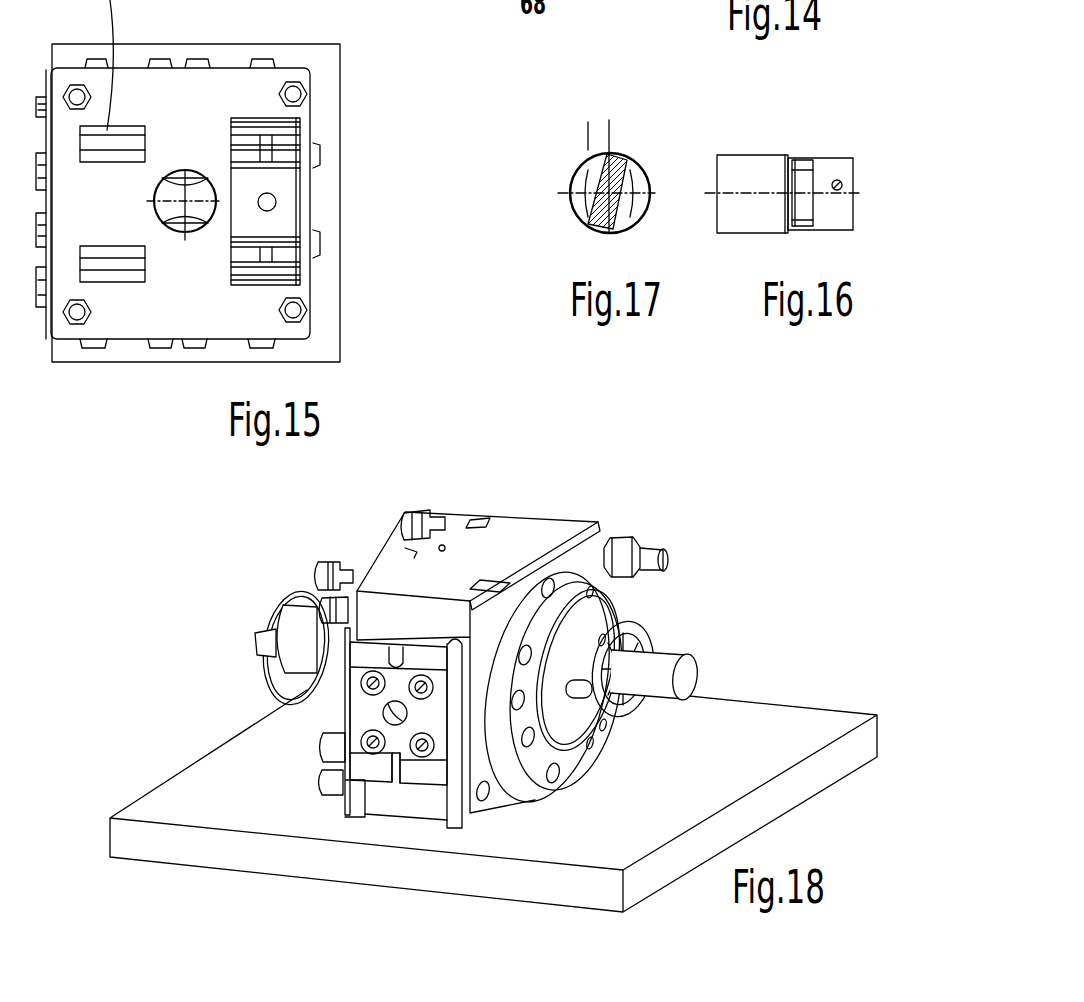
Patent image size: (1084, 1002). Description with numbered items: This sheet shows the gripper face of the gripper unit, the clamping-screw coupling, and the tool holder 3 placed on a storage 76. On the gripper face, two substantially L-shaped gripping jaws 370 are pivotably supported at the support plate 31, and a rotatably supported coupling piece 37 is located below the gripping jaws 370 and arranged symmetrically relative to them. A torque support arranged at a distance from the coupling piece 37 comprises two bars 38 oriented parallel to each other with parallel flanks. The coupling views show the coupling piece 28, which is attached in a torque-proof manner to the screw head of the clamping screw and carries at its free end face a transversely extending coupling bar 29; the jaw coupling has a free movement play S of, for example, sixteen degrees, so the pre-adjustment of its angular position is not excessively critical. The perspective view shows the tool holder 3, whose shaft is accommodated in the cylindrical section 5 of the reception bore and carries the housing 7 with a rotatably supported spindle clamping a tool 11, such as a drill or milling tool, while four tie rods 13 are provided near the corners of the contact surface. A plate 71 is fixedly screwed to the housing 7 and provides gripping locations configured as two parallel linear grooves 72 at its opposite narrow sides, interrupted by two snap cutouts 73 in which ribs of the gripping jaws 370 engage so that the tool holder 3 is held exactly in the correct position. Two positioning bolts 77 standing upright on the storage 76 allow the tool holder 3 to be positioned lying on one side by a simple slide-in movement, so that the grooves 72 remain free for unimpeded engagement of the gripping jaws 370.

In FIG. 15, the support plate 31 is at (245, 88).
In FIG. 15, the coupling piece 37 is at (184, 176).
In FIG. 17, the coupling piece 37 is at (573, 177).
In FIG. 16, the coupling piece 37 is at (833, 217).
In FIG. 15, the gripping jaws 370 is at (283, 145).
In FIG. 15, the bars 38 is at (122, 275).
In FIG. 17, the coupling bar 29 is at (623, 160).
In FIG. 16, the coupling bar 29 is at (802, 180).
In FIG. 16, the coupling piece 28 is at (748, 222).
In FIG. 17, the free movement play S is at (598, 138).
In FIG. 18, the tool holder 3 is at (630, 518).
In FIG. 18, the housing 7 is at (520, 547).
In FIG. 18, the tie rods 13 is at (327, 567).
In FIG. 18, the tool 11 is at (650, 660).
In FIG. 18, the cylindrical section 5 is at (328, 652).
In FIG. 18, the plate 71 is at (370, 715).
In FIG. 18, the linear grooves 72 is at (425, 647).
In FIG. 18, the snap cutouts 73 is at (393, 650).
In FIG. 18, the positioning bolts 77 is at (355, 802).
In FIG. 18, the storage 76 is at (800, 733).